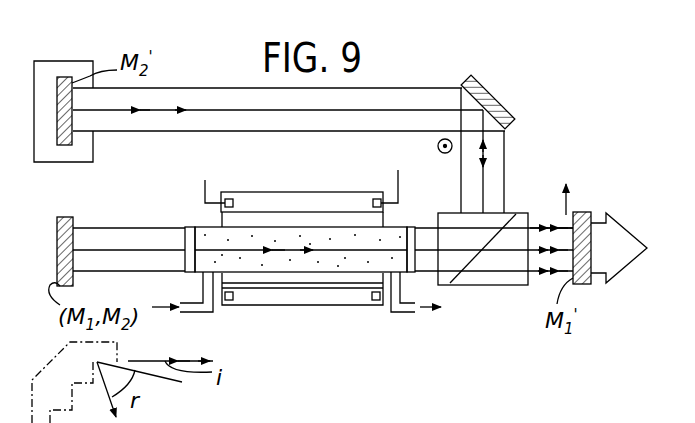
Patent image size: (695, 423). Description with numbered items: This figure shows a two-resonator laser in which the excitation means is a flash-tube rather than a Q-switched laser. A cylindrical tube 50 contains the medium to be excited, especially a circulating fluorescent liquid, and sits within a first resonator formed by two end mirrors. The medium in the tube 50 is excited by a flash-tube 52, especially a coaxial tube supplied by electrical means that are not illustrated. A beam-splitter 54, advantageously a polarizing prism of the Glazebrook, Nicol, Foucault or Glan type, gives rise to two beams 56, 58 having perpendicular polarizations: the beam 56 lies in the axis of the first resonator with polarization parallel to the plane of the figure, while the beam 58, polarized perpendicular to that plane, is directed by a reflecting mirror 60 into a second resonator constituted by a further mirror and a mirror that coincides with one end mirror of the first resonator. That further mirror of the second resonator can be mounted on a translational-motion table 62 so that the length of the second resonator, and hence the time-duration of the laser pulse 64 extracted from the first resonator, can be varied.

The cylindrical tube 50 is at (194, 220).
The flash-tube 52 is at (302, 183).
The beam-splitter 54 is at (465, 287).
The beam 56 is at (550, 225).
The beam 58 is at (481, 155).
The reflecting mirror 60 is at (513, 121).
The translational-motion table 62 is at (70, 61).
The laser pulse 64 is at (599, 262).